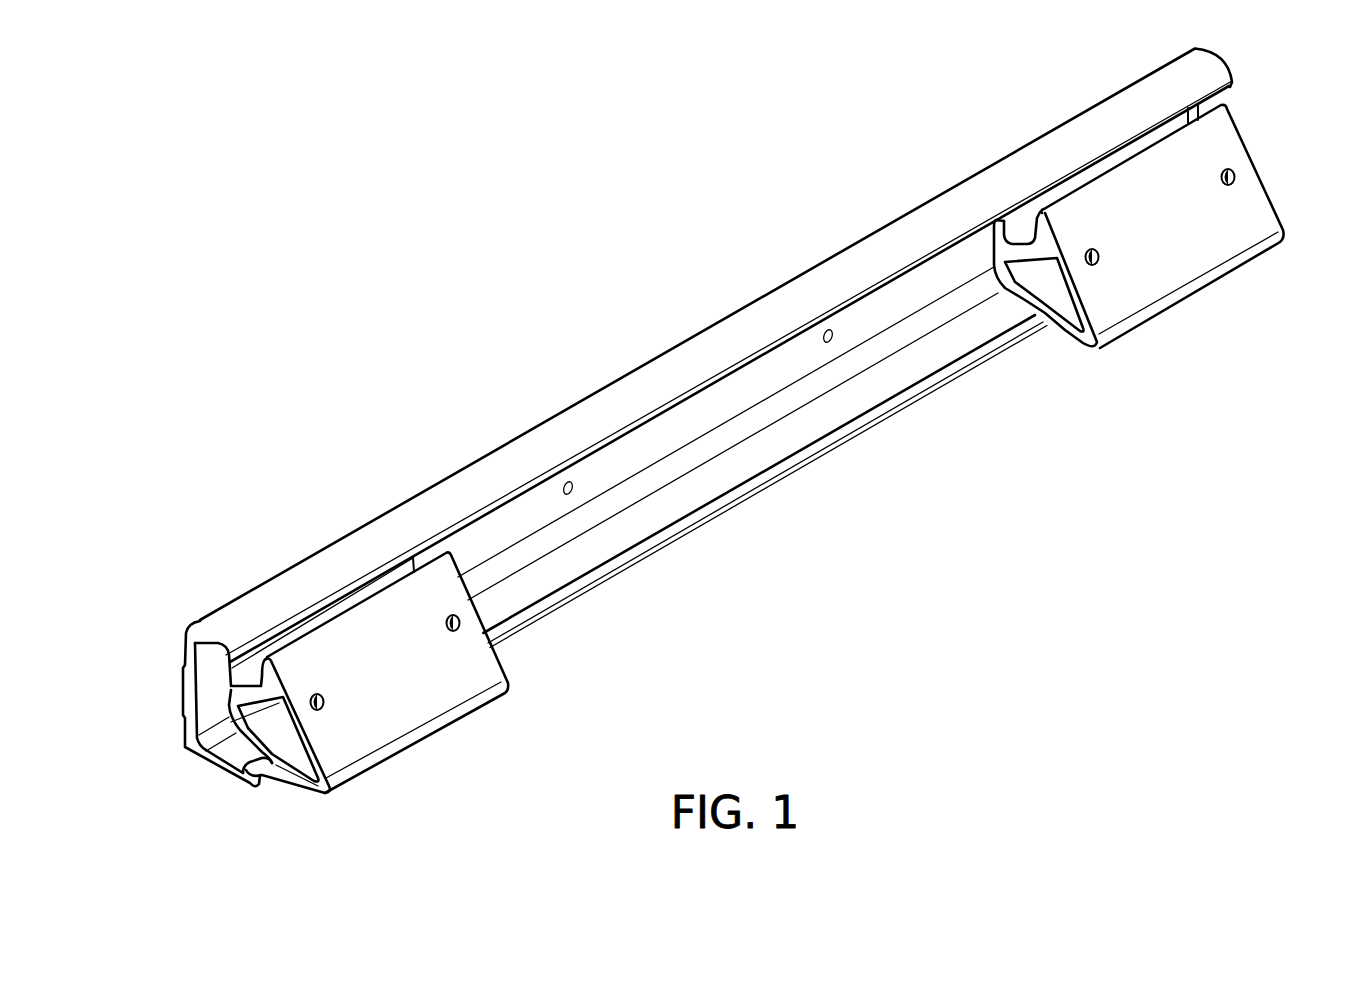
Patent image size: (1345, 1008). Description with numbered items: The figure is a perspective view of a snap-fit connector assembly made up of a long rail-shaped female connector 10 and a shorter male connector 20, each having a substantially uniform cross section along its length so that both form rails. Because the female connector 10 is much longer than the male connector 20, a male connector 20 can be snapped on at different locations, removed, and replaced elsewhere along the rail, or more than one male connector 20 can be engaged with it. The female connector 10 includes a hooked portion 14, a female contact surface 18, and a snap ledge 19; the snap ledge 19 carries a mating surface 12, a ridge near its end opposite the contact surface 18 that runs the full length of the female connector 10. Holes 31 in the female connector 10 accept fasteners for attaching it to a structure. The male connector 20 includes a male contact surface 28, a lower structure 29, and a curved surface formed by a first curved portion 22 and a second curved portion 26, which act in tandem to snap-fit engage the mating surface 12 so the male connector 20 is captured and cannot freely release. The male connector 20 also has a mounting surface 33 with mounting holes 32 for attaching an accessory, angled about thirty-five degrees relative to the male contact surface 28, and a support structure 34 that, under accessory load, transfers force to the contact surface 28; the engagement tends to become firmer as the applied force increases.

The female connector 10 is at (697, 334).
The mating surface 12 is at (893, 410).
The hooked portion 14 is at (853, 267).
The female contact surface 18 is at (672, 438).
The snap ledge 19 is at (770, 448).
The male connector 20 is at (438, 732).
The first curved portion 22 is at (258, 765).
The second curved portion 26 is at (276, 775).
The male contact surface 28 is at (207, 692).
The lower structure 29 is at (226, 757).
The holes 31 is at (580, 498).
The mounting holes 32 is at (462, 624).
The mounting surface 33 is at (373, 635).
The support structure 34 is at (255, 678).